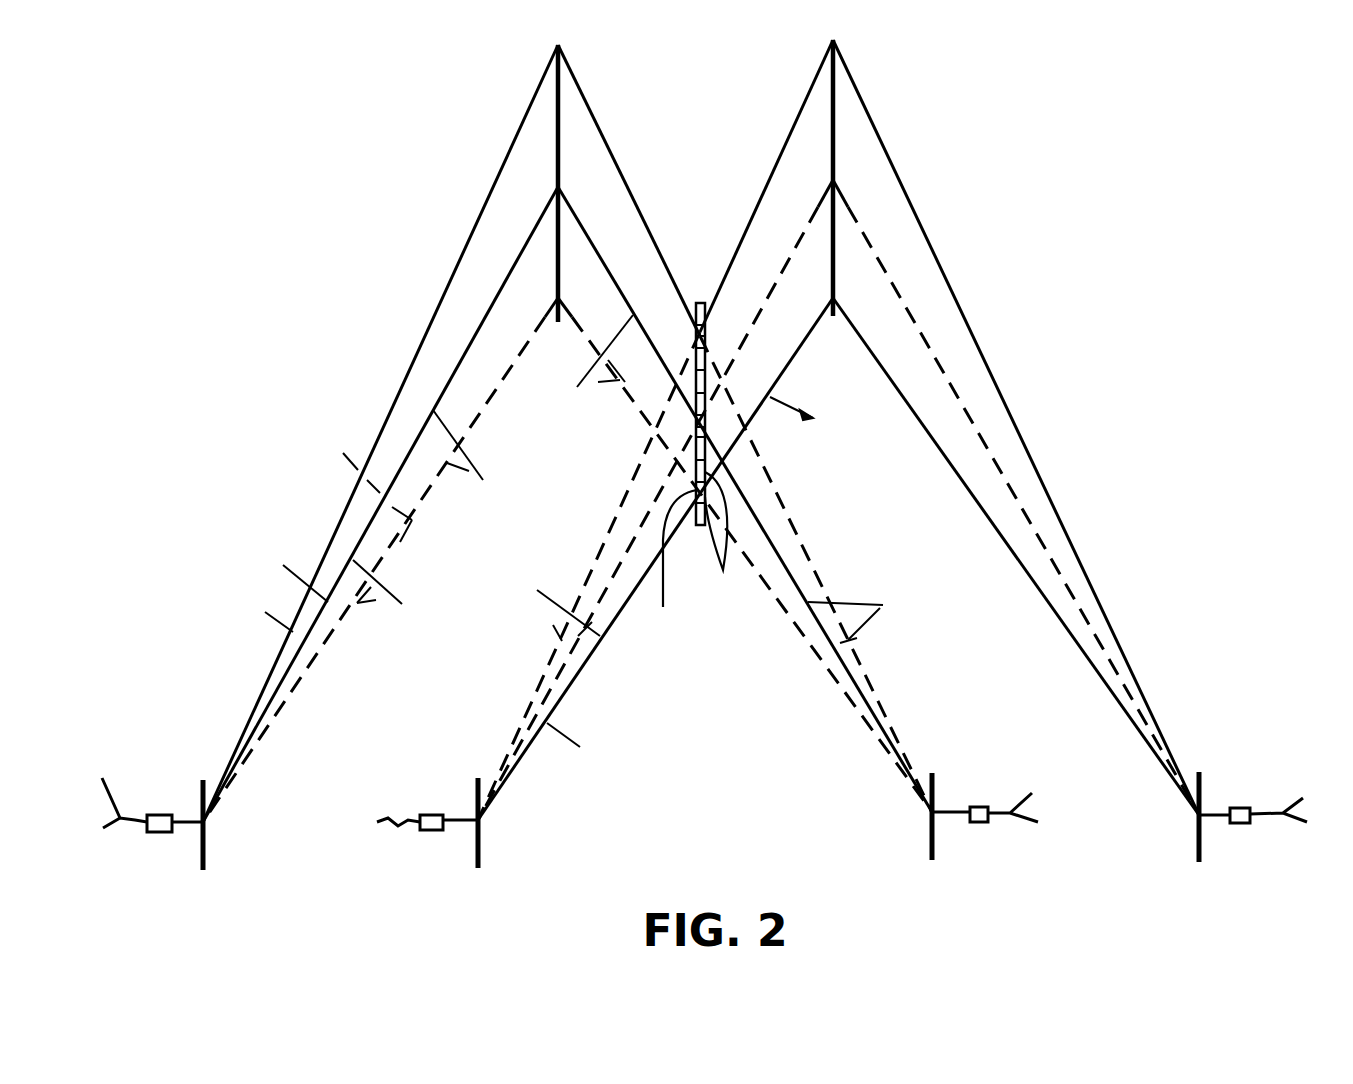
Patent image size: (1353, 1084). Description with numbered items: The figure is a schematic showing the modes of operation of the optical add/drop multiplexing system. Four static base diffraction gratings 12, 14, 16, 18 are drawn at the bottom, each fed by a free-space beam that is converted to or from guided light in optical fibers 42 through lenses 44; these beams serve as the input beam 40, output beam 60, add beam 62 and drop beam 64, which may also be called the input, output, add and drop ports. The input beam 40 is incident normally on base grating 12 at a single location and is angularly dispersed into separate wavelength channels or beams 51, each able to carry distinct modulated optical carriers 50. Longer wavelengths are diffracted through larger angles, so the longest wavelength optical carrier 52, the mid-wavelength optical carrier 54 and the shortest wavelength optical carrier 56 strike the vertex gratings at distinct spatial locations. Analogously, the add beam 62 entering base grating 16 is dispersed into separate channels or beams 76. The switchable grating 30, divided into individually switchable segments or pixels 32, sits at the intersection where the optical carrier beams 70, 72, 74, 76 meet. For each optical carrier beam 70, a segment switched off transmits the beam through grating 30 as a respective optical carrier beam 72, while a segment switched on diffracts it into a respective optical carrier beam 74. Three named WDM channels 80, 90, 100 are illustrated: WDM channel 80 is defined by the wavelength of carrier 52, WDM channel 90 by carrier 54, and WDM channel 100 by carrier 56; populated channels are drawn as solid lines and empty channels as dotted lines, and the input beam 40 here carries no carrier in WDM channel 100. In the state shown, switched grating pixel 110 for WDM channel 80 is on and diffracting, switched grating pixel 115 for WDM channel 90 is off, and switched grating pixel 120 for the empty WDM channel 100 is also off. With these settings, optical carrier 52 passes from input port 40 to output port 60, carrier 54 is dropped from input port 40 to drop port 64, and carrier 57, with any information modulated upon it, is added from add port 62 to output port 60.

The base diffraction grating 12 is at (205, 840).
The base diffraction grating 14 is at (1197, 840).
The base diffraction grating 16 is at (482, 842).
The base diffraction grating 18 is at (928, 833).
The switchable grating 30 is at (698, 302).
The switchable grating segment (pixel) 32 is at (722, 540).
The input beam (input port) 40 is at (187, 824).
The optical fibers (waveguides) 42 is at (392, 818).
The lenses 44 is at (163, 815).
The optical carriers 50 is at (397, 593).
The wavelength channels (beams) 51 is at (479, 456).
The longest wavelength optical carrier 52 is at (258, 615).
The mid-wavelength optical carrier 54 is at (284, 576).
The shortest wavelength optical carrier 56 is at (356, 490).
The added optical carrier 57 is at (582, 742).
The output beam (output port) 60 is at (1220, 818).
The add beam (add port) 62 is at (458, 823).
The drop beam (drop port) 64 is at (953, 815).
The optical carrier beams 70 is at (584, 359).
The transmitted optical carrier beam 72 is at (866, 616).
The diffracted optical carrier beam 74 is at (813, 416).
The dispersed add channels (beams) 76 is at (546, 609).
The WDM channel 80 is at (785, 142).
The WDM channel 90 is at (800, 232).
The WDM channel 100 is at (303, 292).
The switched grating pixel 110 is at (706, 336).
The switched grating pixel 115 is at (694, 427).
The switched grating pixel 120 is at (669, 565).